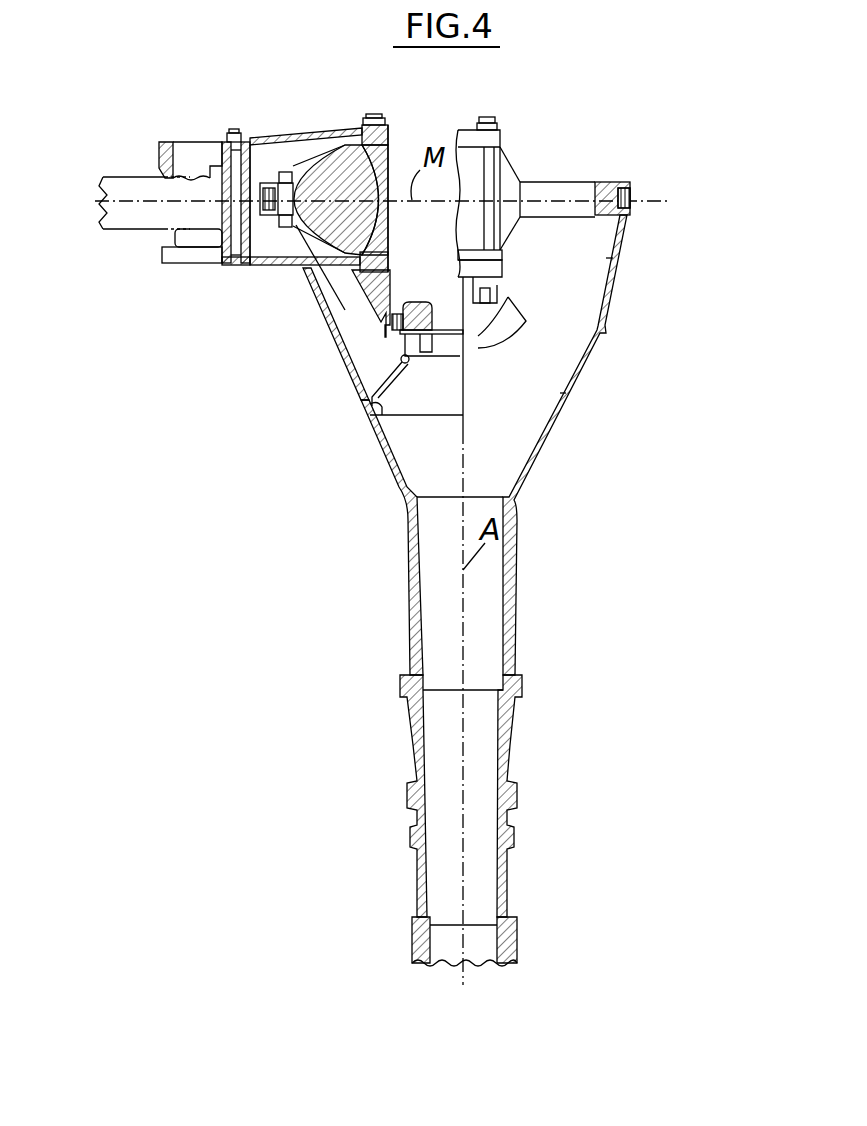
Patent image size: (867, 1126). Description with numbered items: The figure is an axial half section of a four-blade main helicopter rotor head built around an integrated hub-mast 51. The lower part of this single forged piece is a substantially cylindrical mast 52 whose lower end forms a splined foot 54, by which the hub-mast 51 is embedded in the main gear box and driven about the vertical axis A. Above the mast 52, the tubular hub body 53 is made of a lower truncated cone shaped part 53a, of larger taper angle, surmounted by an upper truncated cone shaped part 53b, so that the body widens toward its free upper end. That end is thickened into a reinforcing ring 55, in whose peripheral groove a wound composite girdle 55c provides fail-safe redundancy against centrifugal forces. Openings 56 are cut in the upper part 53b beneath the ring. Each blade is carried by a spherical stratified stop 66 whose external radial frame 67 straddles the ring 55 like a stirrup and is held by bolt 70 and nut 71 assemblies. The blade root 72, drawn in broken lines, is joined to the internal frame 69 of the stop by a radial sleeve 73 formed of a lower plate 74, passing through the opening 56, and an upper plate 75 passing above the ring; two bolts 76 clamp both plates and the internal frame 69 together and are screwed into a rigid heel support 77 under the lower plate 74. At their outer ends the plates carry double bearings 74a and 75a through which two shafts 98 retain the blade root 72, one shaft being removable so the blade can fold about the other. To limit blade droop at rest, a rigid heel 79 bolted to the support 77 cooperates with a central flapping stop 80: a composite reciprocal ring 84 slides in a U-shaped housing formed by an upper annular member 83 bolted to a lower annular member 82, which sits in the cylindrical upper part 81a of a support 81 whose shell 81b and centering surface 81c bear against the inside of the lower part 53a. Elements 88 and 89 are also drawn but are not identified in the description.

The integrated hub-mast 51 is at (394, 518).
The mast 52 is at (510, 690).
The hub body 53 is at (605, 339).
The lower truncated cone shaped part 53a is at (565, 393).
The upper truncated cone shaped part 53b is at (615, 263).
The splined foot 54 is at (505, 938).
The reinforcing ring 55 is at (603, 181).
The girdle 55c is at (633, 190).
The opening 56 is at (318, 275).
The spherical stratified stop 66 is at (287, 172).
The external radial frame 67 is at (337, 287).
The internal frame 69 is at (468, 213).
The bolt 70 is at (313, 148).
The nut 71 is at (285, 228).
The blade root 72 is at (125, 228).
The radial sleeve 73 is at (205, 276).
The lower plate 74 is at (378, 292).
The double bearing 74a is at (165, 249).
The upper plate 75 is at (321, 131).
The double bearing 75a is at (163, 165).
The bolt 76 is at (485, 118).
The rigid heel support 77 is at (470, 258).
The rigid heel 79 is at (500, 313).
The central flapping stop 80 is at (430, 362).
The support 81 is at (442, 418).
The cylindrical upper part 81a is at (455, 361).
The truncated cone shaped shell 81b is at (401, 364).
The truncated cone shaped centering surface 81c is at (380, 416).
The lower annular member 82 is at (480, 350).
The upper annular member 83 is at (488, 300).
The reciprocal ring 84 is at (353, 398).
The plate connection 88 is at (232, 252).
The mounting plates 89 is at (230, 128).
The shaft 98 is at (180, 160).